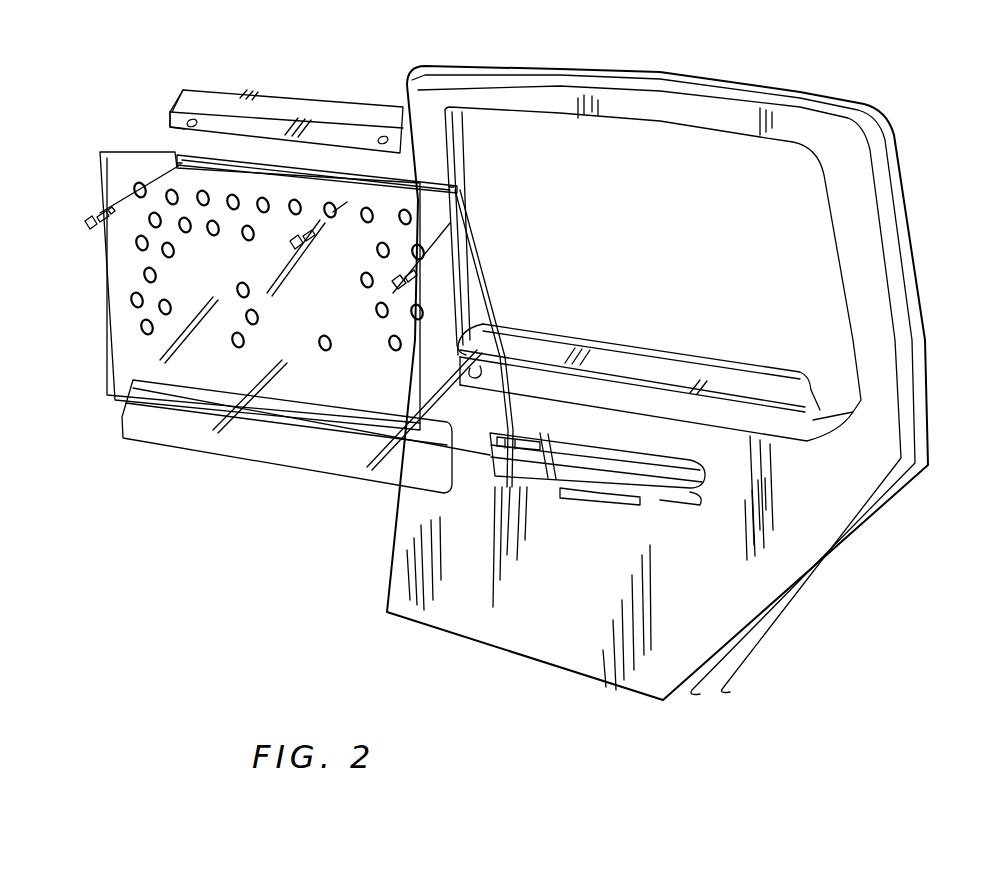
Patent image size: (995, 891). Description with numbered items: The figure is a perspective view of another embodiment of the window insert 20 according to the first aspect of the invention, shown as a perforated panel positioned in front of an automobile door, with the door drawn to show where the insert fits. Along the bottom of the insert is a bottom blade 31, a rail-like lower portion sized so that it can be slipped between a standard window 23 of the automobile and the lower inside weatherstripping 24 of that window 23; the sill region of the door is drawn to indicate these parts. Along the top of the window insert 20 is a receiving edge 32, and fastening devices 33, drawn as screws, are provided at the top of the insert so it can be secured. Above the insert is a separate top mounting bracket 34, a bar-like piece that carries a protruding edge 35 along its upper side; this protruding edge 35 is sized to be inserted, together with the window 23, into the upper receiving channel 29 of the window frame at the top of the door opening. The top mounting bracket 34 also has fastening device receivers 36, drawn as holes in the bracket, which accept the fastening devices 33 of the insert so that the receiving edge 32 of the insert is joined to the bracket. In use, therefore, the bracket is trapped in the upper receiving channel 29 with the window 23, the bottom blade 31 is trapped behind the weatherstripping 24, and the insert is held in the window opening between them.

The window insert 20 is at (130, 160).
The window 23 is at (750, 384).
The lower inside weatherstripping 24 is at (633, 355).
The upper receiving channel 29 is at (680, 128).
The bottom blade 31 is at (193, 440).
The receiving edge 32 is at (313, 172).
The fastening devices 33 is at (95, 222).
The top mounting bracket 34 is at (172, 120).
The protruding edge 35 is at (253, 88).
The fastening device receivers 36 is at (185, 120).